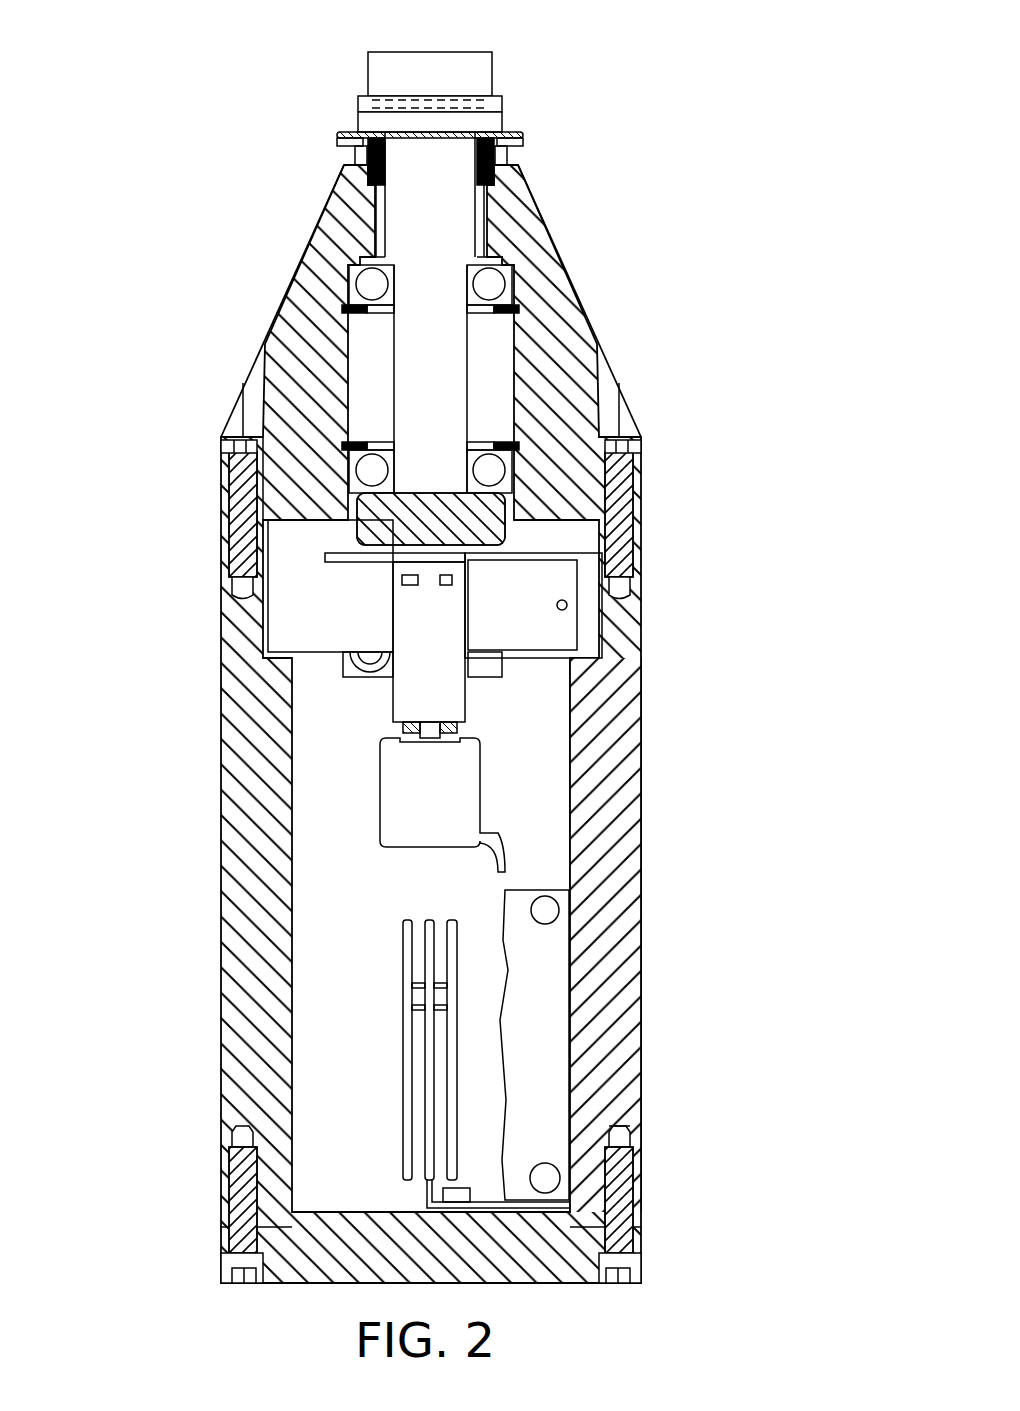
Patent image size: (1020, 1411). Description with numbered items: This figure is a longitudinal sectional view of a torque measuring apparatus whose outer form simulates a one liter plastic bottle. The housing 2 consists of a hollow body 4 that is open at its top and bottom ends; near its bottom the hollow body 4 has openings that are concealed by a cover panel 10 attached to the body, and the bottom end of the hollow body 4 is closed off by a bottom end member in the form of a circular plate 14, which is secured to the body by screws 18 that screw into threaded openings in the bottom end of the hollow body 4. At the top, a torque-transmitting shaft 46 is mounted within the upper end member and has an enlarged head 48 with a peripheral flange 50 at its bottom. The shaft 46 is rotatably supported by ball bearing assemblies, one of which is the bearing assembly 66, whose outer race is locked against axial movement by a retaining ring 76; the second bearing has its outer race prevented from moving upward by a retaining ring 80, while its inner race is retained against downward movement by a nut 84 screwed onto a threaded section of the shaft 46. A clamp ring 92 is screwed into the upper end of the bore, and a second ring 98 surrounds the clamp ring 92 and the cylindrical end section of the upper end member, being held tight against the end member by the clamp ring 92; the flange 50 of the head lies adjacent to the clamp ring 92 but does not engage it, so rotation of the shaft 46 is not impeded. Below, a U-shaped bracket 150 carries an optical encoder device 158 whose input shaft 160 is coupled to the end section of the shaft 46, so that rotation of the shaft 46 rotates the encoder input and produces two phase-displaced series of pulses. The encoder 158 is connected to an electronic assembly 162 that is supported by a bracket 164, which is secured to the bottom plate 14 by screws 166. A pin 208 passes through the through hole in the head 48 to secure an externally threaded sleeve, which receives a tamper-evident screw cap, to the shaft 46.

The housing 2 is at (192, 658).
The hollow body 4 is at (641, 672).
The cover panel 10 is at (560, 1020).
The circular plate 14 is at (570, 1285).
The screws 18 is at (228, 1193).
The torque-transmitting shaft 46 is at (450, 352).
The enlarged head 48 is at (495, 72).
The peripheral flange 50 is at (355, 133).
The ball bearing assembly 66 is at (497, 283).
The retaining ring 76 is at (360, 303).
The retaining ring 80 is at (355, 442).
The nut 84 is at (370, 520).
The clamp ring 92 is at (523, 133).
The second ring 98 is at (523, 140).
The U-shaped bracket 150 is at (400, 712).
The optical encoder device 158 is at (500, 805).
The input shaft 160 is at (440, 728).
The electronic assembly 162 is at (385, 960).
The bracket 164 is at (430, 1115).
The screws 166 is at (625, 1140).
The pin 208 is at (497, 100).